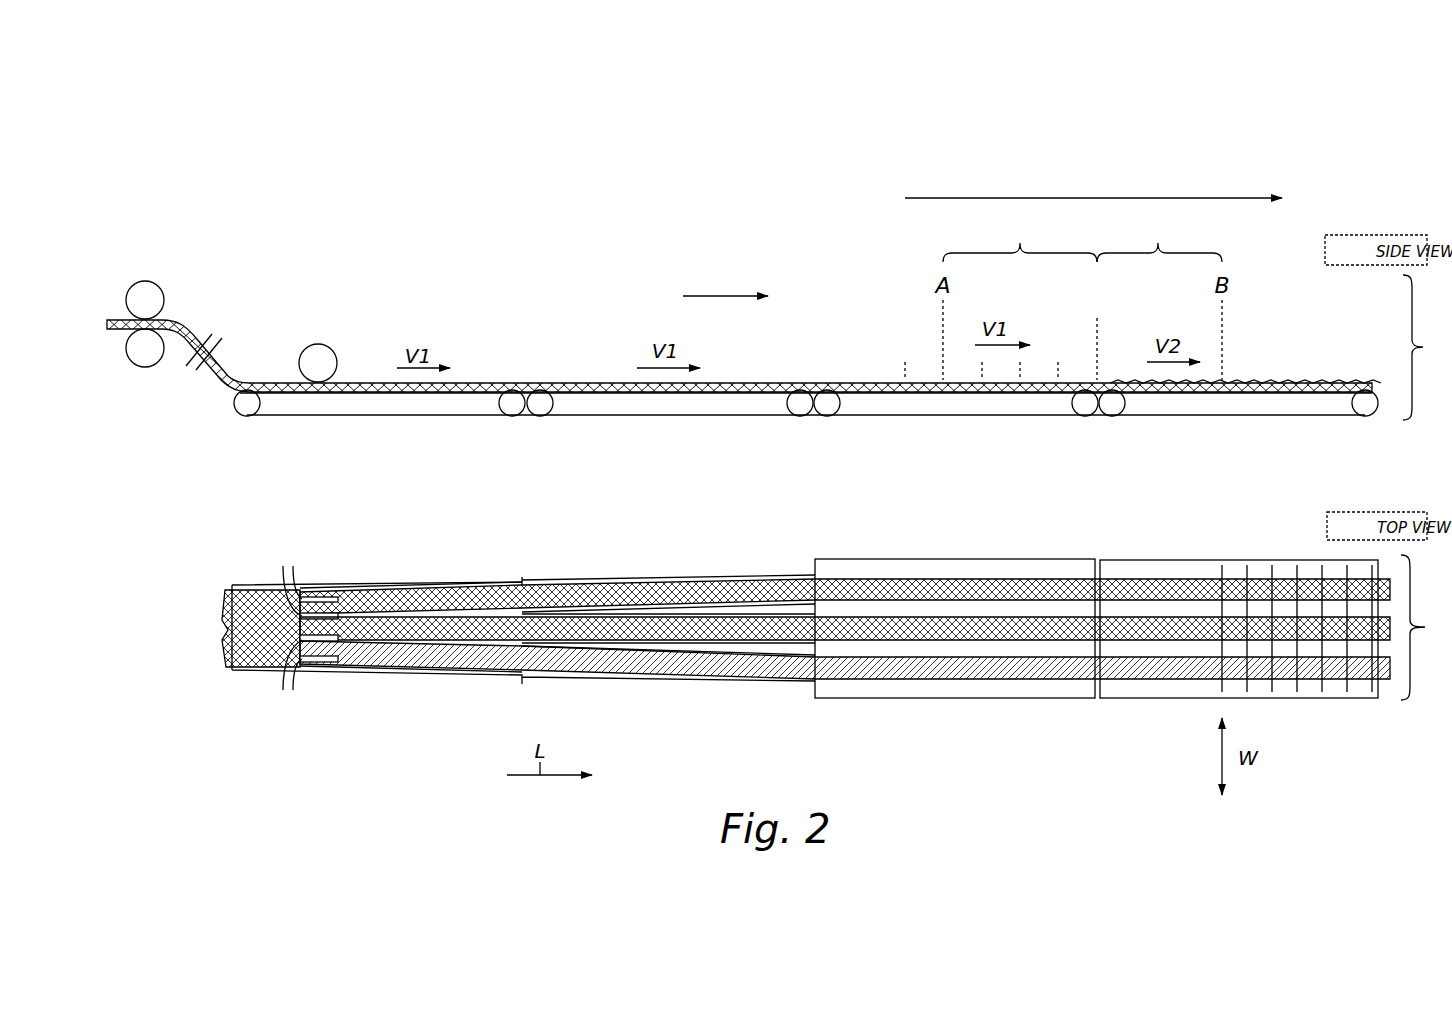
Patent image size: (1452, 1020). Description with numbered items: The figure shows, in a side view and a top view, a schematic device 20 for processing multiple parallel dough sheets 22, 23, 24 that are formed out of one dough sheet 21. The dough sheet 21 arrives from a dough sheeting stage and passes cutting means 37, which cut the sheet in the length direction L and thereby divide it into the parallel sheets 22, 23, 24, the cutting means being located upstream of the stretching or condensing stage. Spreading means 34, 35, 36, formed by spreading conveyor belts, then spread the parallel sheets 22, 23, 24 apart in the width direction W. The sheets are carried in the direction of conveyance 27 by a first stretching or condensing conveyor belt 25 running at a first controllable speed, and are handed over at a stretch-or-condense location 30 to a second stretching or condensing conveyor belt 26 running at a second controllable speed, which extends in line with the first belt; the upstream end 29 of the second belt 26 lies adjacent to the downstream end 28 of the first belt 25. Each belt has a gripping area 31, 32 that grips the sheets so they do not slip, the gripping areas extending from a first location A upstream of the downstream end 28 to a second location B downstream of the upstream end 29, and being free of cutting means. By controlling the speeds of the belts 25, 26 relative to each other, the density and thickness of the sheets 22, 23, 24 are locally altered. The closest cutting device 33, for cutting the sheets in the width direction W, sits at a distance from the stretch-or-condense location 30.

The device 20 is at (1327, 148).
The dough sheet 21 is at (270, 374).
The dough sheet 22 is at (528, 378).
The dough sheet 23 is at (483, 625).
The dough sheet 24 is at (430, 654).
The first stretching or condensing conveyor belt 25 is at (953, 405).
The second stretching or condensing conveyor belt 26 is at (1236, 405).
The direction of conveyance 27 is at (718, 296).
The downstream end 28 is at (1090, 377).
The upstream end 29 is at (1104, 377).
The stretch-or-condense location 30 is at (1097, 425).
The gripping area 31 is at (1020, 298).
The gripping area 32 is at (1159, 239).
The cutting device 33 is at (1229, 320).
The spreading means 34 is at (640, 580).
The spreading means 35 is at (690, 614).
The spreading means 36 is at (660, 678).
The cutting means 37 is at (318, 348).